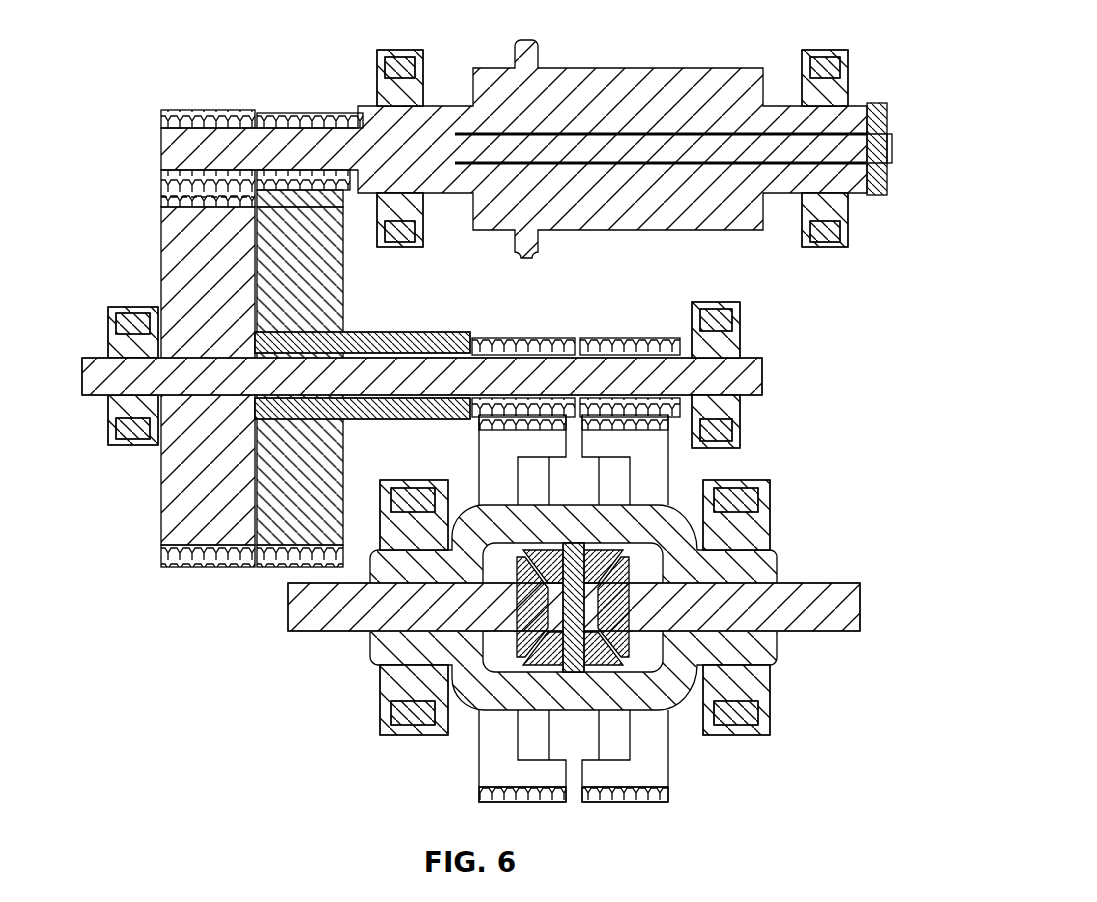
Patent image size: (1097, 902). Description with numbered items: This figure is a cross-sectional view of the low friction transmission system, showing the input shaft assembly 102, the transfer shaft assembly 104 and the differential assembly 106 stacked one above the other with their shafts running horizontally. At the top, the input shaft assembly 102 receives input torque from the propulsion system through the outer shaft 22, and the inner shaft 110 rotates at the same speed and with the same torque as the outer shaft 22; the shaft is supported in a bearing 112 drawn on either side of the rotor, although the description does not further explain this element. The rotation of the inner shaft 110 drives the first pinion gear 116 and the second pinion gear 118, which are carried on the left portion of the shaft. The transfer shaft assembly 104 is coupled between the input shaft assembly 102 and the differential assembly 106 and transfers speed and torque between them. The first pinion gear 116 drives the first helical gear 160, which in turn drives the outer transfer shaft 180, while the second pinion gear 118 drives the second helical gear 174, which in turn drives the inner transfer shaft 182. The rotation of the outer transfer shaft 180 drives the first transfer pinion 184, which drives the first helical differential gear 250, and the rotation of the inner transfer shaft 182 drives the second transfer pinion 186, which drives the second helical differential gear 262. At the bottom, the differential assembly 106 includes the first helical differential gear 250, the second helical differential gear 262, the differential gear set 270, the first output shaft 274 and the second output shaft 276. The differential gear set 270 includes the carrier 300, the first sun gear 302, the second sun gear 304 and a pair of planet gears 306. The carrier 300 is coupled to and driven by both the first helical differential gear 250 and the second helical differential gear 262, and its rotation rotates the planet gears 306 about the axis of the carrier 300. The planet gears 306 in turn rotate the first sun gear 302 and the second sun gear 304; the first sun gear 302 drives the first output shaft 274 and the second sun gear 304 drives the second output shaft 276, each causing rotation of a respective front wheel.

The outer shaft 22 is at (680, 62).
The input shaft assembly 102 is at (888, 100).
The transfer shaft assembly 104 is at (832, 310).
The differential assembly 106 is at (830, 534).
The inner shaft 110 is at (770, 122).
The bearing 112 is at (453, 107).
The first pinion gear 116 is at (327, 302).
The second pinion gear 118 is at (157, 302).
The first helical gear 160 is at (351, 199).
The second helical gear 174 is at (150, 193).
The outer transfer shaft 180 is at (407, 332).
The inner transfer shaft 182 is at (749, 353).
The first transfer pinion 184 is at (542, 338).
The second transfer pinion 186 is at (620, 338).
The first helical differential gear 250 is at (520, 810).
The second helical differential gear 262 is at (630, 810).
The differential gear set 270 is at (462, 727).
The first output shaft 274 is at (296, 642).
The second output shaft 276 is at (844, 567).
The carrier 300 is at (668, 505).
The first sun gear 302 is at (516, 640).
The second sun gear 304 is at (633, 567).
The planet gears 306 is at (532, 548).